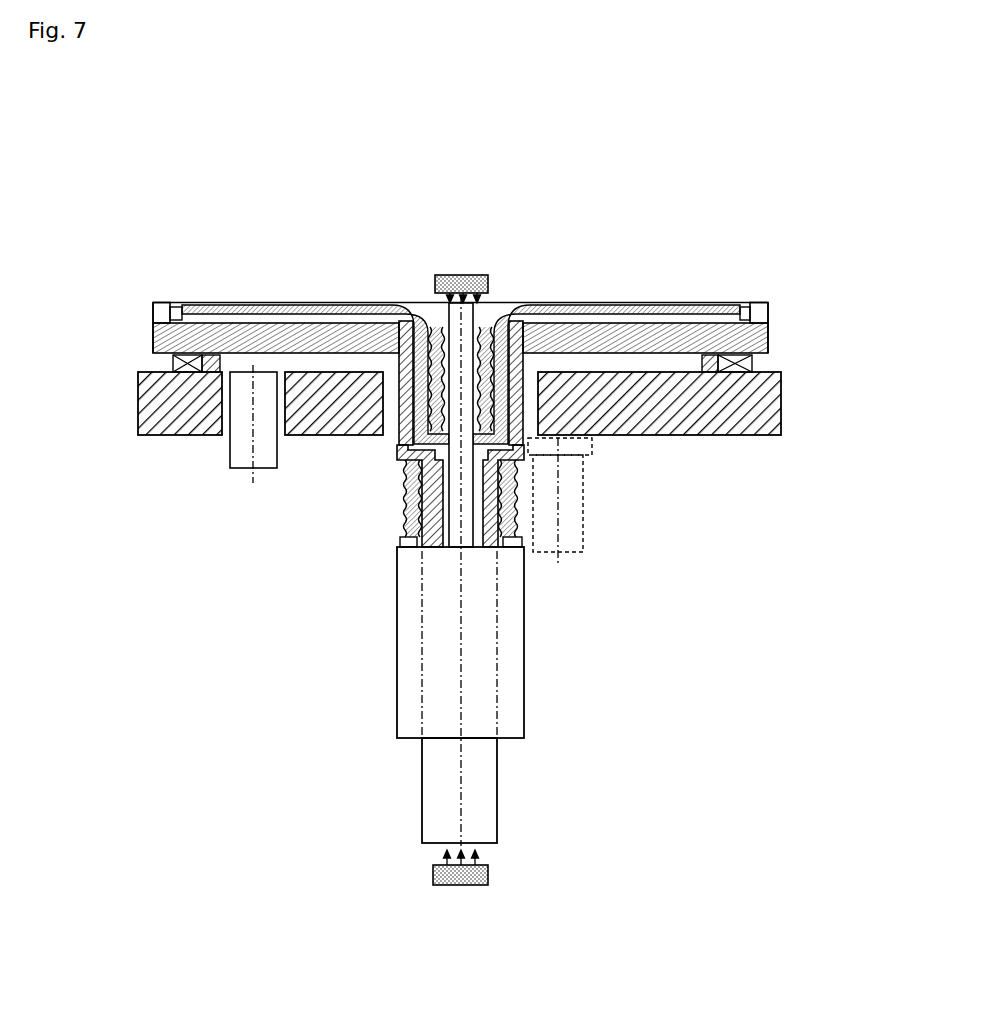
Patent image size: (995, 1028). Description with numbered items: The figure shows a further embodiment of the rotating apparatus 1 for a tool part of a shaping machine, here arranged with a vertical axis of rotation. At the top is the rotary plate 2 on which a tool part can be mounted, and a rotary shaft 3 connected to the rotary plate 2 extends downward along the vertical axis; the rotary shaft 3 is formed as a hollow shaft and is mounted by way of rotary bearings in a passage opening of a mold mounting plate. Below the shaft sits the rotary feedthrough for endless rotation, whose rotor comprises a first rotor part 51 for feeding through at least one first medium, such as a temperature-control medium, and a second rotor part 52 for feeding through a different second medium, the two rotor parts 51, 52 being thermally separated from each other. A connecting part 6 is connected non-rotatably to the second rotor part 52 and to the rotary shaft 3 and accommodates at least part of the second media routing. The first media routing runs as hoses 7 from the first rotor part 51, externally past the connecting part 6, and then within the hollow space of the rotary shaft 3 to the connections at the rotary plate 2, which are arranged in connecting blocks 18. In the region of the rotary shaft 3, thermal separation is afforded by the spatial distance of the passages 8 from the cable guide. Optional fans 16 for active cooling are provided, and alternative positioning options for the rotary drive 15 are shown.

The rotating apparatus 1 is at (158, 249).
The rotary plate 2 is at (743, 345).
The rotary shaft 3 is at (515, 358).
The connecting part 6 is at (400, 460).
The hoses 7 is at (723, 310).
The passages 8 is at (412, 357).
The rotary drive 15 is at (243, 458).
The fans 16 is at (468, 283).
The connecting blocks 18 is at (160, 313).
The first rotor part 51 is at (515, 645).
The second rotor part 52 is at (485, 770).